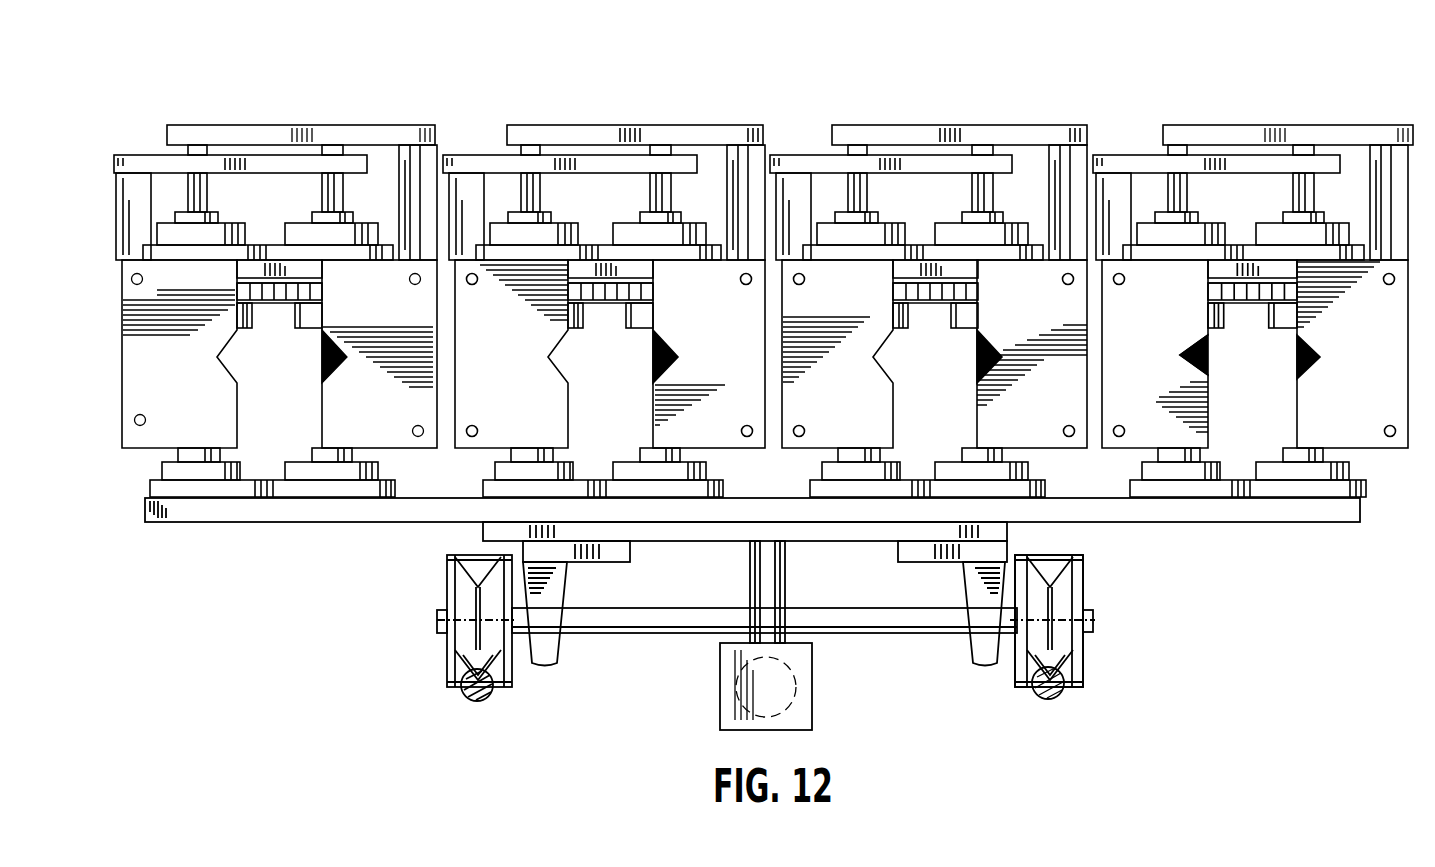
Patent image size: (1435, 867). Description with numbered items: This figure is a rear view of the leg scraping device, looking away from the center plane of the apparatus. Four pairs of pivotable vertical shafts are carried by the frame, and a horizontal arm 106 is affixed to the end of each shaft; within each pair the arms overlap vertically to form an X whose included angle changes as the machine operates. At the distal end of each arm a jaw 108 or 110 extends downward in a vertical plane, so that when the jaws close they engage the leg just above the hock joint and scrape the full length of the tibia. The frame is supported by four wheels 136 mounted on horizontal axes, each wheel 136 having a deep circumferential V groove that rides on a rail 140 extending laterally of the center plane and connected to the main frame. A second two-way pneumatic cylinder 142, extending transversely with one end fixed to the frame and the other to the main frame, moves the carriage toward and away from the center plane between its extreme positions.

The horizontal arm 106 is at (277, 125).
The jaw 108 is at (377, 387).
The jaw 110 is at (155, 387).
The wheel 136 is at (1268, 125).
The rail 140 is at (1060, 700).
The second two-way pneumatic cylinder 142 is at (790, 687).